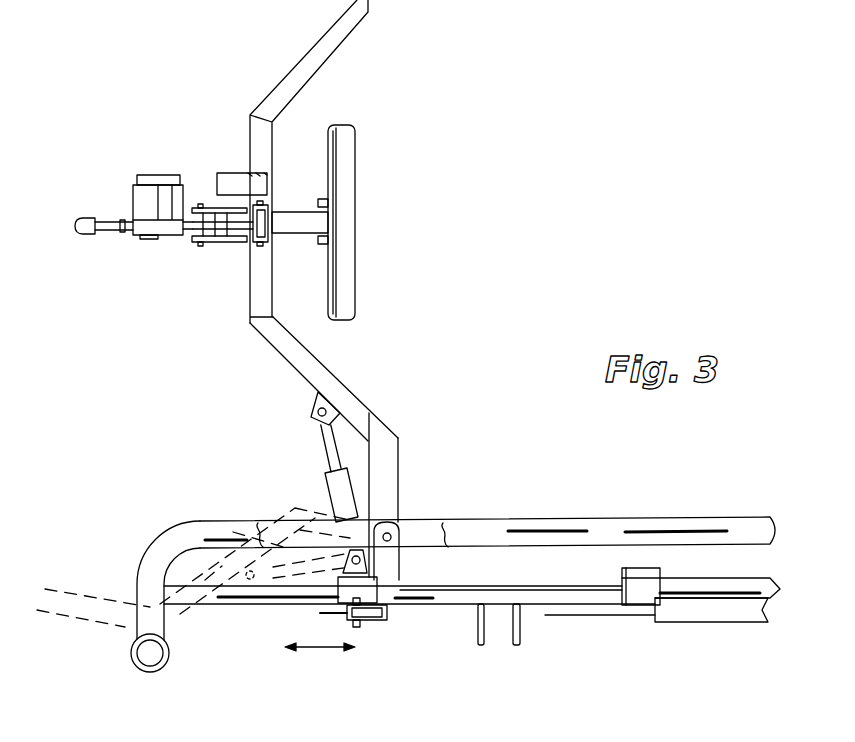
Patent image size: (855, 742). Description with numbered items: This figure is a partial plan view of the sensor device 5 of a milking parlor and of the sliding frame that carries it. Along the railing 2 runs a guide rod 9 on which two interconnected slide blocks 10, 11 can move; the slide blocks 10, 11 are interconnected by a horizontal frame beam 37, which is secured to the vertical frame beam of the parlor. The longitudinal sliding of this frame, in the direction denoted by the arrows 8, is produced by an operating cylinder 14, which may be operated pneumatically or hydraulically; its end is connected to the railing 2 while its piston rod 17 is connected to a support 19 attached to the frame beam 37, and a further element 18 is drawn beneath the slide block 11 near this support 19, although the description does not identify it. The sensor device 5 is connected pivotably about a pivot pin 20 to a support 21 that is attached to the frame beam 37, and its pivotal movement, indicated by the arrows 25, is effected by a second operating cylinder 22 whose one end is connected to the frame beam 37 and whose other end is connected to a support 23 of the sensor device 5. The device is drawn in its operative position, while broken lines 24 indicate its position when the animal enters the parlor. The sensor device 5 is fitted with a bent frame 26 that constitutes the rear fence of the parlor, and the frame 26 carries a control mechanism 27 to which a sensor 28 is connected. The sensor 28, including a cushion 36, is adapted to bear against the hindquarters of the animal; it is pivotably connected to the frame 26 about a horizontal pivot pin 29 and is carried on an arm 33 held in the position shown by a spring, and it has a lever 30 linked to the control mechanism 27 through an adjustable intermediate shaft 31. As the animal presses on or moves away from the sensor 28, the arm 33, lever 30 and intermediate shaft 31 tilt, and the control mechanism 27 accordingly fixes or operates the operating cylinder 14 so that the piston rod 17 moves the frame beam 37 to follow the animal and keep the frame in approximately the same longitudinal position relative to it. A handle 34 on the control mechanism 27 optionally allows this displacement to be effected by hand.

The railing 2 is at (532, 535).
The sensor device 5 is at (355, 283).
The arrows 8 is at (320, 650).
The guide rod 9 is at (220, 602).
The slide block 10 is at (632, 587).
The slide block 11 is at (367, 588).
The operating cylinder 14 is at (708, 615).
The piston rod 17 is at (550, 620).
The locking device 18 is at (378, 623).
The support 19 is at (340, 615).
The pivot pin 20 is at (385, 520).
The support 21 is at (392, 552).
The operating cylinder 22 is at (337, 482).
The support 23 is at (325, 408).
The broken lines 24 is at (78, 603).
The arrows 25 is at (240, 185).
The bent frame 26 is at (318, 57).
The control mechanism 27 is at (167, 243).
The sensor 28 is at (337, 160).
The horizontal pivot pin 29 is at (255, 243).
The lever 30 is at (230, 242).
The adjustable intermediate shaft 31 is at (147, 222).
The arm 33 is at (292, 220).
The handle 34 is at (93, 203).
The cushion 36 is at (352, 227).
The horizontal frame beam 37 is at (472, 580).